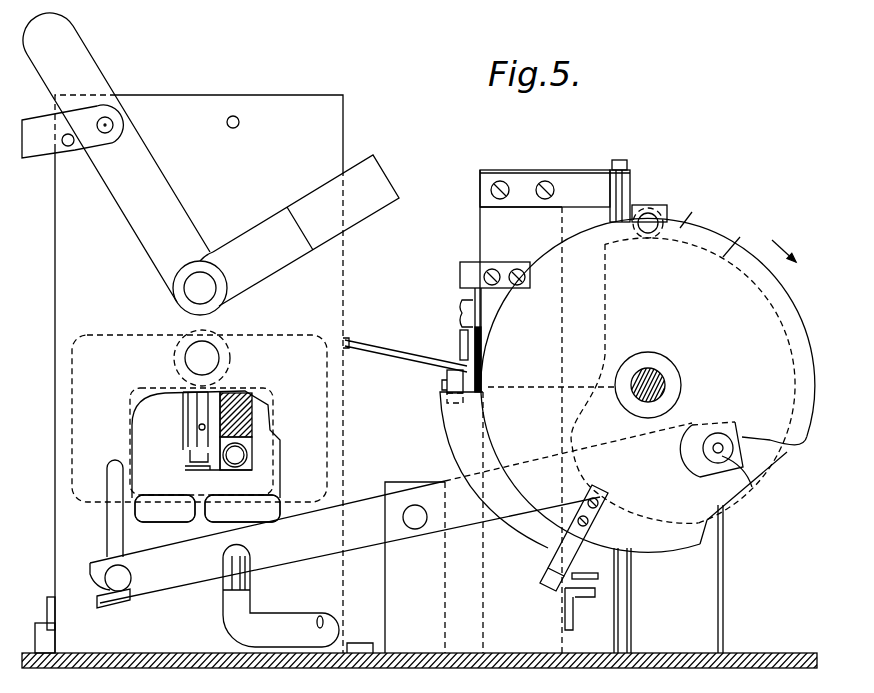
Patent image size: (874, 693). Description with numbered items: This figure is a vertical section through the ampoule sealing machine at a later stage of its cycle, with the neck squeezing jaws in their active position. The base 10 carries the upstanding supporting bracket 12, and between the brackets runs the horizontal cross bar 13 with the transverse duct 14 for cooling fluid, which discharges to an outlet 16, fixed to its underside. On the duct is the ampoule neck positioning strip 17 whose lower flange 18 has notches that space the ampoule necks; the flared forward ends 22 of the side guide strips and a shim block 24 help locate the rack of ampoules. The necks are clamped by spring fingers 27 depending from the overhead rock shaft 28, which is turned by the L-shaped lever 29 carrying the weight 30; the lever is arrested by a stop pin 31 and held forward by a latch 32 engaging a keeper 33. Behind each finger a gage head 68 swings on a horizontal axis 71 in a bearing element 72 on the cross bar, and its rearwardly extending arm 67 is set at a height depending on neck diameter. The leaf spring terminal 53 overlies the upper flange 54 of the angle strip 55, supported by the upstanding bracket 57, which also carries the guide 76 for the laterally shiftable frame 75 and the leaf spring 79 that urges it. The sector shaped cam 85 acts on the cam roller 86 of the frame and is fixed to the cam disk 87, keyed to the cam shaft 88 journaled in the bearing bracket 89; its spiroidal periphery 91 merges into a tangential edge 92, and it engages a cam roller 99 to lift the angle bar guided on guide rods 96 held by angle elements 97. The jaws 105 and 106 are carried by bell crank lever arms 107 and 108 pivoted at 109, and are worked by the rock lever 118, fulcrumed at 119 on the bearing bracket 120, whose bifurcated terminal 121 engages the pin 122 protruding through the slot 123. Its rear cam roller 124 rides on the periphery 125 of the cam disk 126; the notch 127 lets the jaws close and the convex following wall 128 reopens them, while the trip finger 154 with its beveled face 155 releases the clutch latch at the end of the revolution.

The base 10 is at (155, 655).
The supporting bracket 12 is at (345, 112).
The cross bar 13 is at (253, 402).
The transverse duct 14 is at (250, 443).
The outlet 16 is at (247, 455).
The ampoule neck positioning strip 17 is at (188, 455).
The lower flange 18 is at (186, 470).
The forward ends of side guide strips 22 is at (47, 600).
The shim block 24 is at (48, 652).
The spring finger 27 is at (183, 390).
The rock shaft 28 is at (200, 276).
The lever 29 is at (95, 52).
The weight 30 is at (377, 179).
The stop pin 31 is at (236, 116).
The latch 32 is at (37, 156).
The keeper 33 is at (68, 147).
The horizontal terminal 53 is at (592, 572).
The upper horizontal flange 54 is at (583, 597).
The angle strip 55 is at (567, 622).
The upstanding bracket 57 is at (478, 228).
The arm 67 is at (380, 346).
The gage head 68 is at (197, 408).
The horizontal axis 71 is at (198, 428).
The bearing element 72 is at (212, 402).
The frame 75 is at (460, 303).
The guide 76 is at (463, 266).
The leaf spring 79 is at (460, 342).
The sector shaped cam 85 is at (453, 443).
The cam roller 86 is at (447, 377).
The cam disk 87 is at (772, 447).
The cam shaft 88 is at (660, 368).
The bearing bracket 89 is at (712, 594).
The spiroidal periphery 91 is at (648, 385).
The tangential edge 92 is at (605, 287).
The guide rod 96 is at (627, 182).
The angle element 97 is at (568, 182).
The cam roller 99 is at (650, 212).
The jaw 105 is at (242, 508).
The jaw 106 is at (165, 508).
The bell crank lever arm 107 is at (328, 425).
The bell crank lever arm 108 is at (72, 416).
The pivot 109 is at (214, 348).
The rock lever 118 is at (300, 548).
The fulcrum 119 is at (415, 529).
The bearing bracket 120 is at (423, 602).
The bifurcated terminal 121 is at (100, 604).
The pin 122 is at (125, 588).
The slot 123 is at (107, 520).
The cam roller 124 is at (752, 487).
The periphery 125 is at (665, 551).
The cam disk 126 is at (704, 213).
The notch 127 is at (706, 434).
The convex following wall 128 is at (764, 428).
The trip finger 154 is at (556, 558).
The beveled face 155 is at (553, 583).